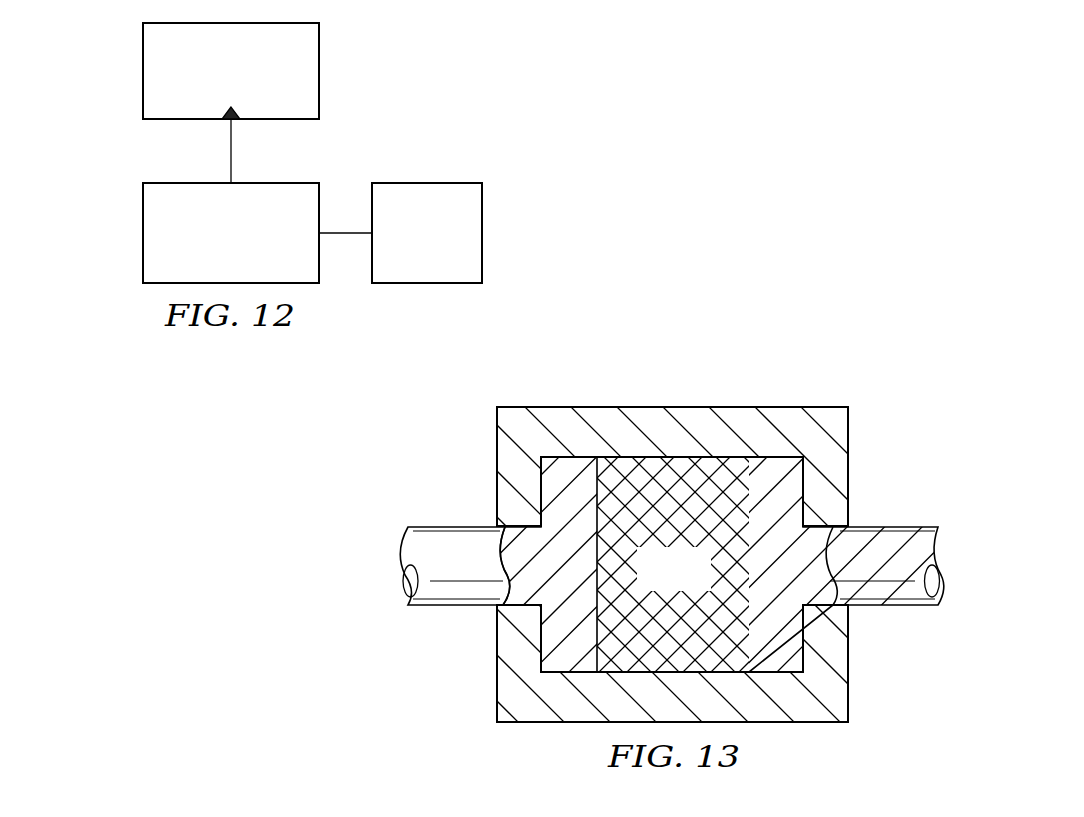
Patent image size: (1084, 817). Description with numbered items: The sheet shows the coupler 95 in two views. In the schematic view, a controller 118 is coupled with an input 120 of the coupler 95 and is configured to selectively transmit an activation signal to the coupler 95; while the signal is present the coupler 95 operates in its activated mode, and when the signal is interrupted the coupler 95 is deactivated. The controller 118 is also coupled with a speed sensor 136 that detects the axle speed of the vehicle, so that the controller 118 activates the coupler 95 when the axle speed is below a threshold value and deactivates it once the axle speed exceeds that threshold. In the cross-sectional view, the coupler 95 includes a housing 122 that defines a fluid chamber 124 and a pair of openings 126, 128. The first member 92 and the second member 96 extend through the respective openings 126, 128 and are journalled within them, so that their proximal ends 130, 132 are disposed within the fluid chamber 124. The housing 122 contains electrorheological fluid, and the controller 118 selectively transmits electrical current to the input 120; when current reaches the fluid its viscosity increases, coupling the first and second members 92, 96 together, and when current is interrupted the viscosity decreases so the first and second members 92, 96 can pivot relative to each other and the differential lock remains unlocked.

In FIG. 12, the coupler 95 is at (143, 70).
In FIG. 13, the coupler 95 is at (640, 566).
In FIG. 12, the input 120 is at (240, 110).
In FIG. 12, the controller 118 is at (143, 232).
In FIG. 12, the speed sensor 136 is at (428, 183).
In FIG. 13, the housing 122 is at (643, 418).
In FIG. 13, the fluid chamber 124 is at (652, 580).
In FIG. 13, the opening 126 is at (856, 612).
In FIG. 13, the opening 128 is at (489, 519).
In FIG. 13, the proximal end 130 is at (570, 615).
In FIG. 13, the proximal end 132 is at (778, 501).
In FIG. 13, the second member 96 is at (425, 608).
In FIG. 13, the first member 92 is at (905, 527).